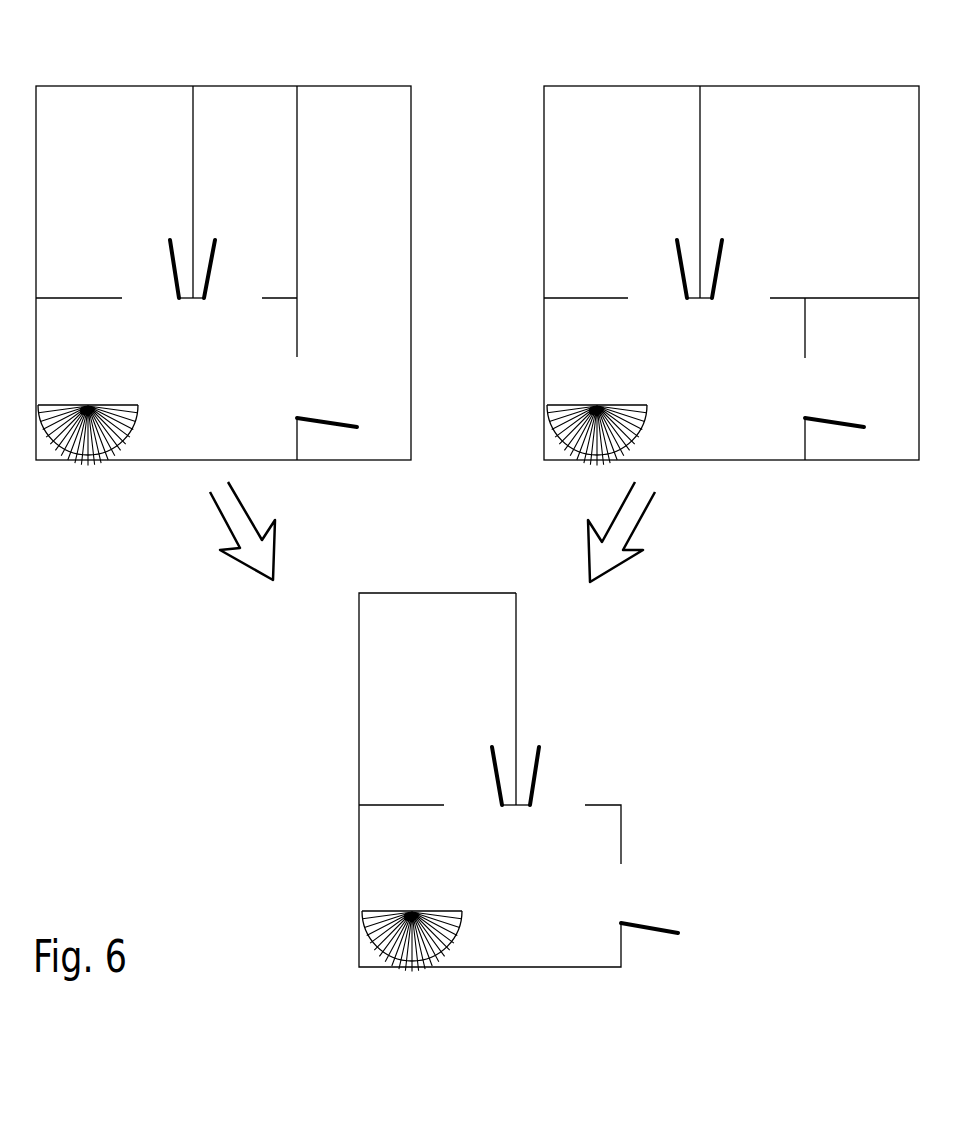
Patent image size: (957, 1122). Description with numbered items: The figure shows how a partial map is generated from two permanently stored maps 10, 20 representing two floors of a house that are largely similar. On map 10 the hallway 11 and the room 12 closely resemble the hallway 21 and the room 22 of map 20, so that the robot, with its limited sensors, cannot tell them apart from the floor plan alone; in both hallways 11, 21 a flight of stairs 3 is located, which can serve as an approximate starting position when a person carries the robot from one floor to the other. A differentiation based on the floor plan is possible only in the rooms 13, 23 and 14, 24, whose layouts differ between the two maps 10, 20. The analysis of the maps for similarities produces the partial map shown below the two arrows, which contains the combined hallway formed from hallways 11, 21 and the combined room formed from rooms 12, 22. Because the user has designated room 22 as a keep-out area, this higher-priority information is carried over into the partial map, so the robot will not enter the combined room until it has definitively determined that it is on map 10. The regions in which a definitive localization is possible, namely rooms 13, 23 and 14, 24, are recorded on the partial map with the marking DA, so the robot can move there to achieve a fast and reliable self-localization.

The flight of stairs 3 is at (56, 399).
The map 10 is at (223, 258).
The hallway 11 is at (232, 231).
The room 12 is at (114, 192).
The room 13 is at (219, 268).
The room 14 is at (336, 416).
The map 20 is at (731, 258).
The hallway 21 is at (798, 338).
The room 22 is at (622, 192).
The room 23 is at (726, 268).
The room 24 is at (845, 416).
The marking DA is at (585, 840).